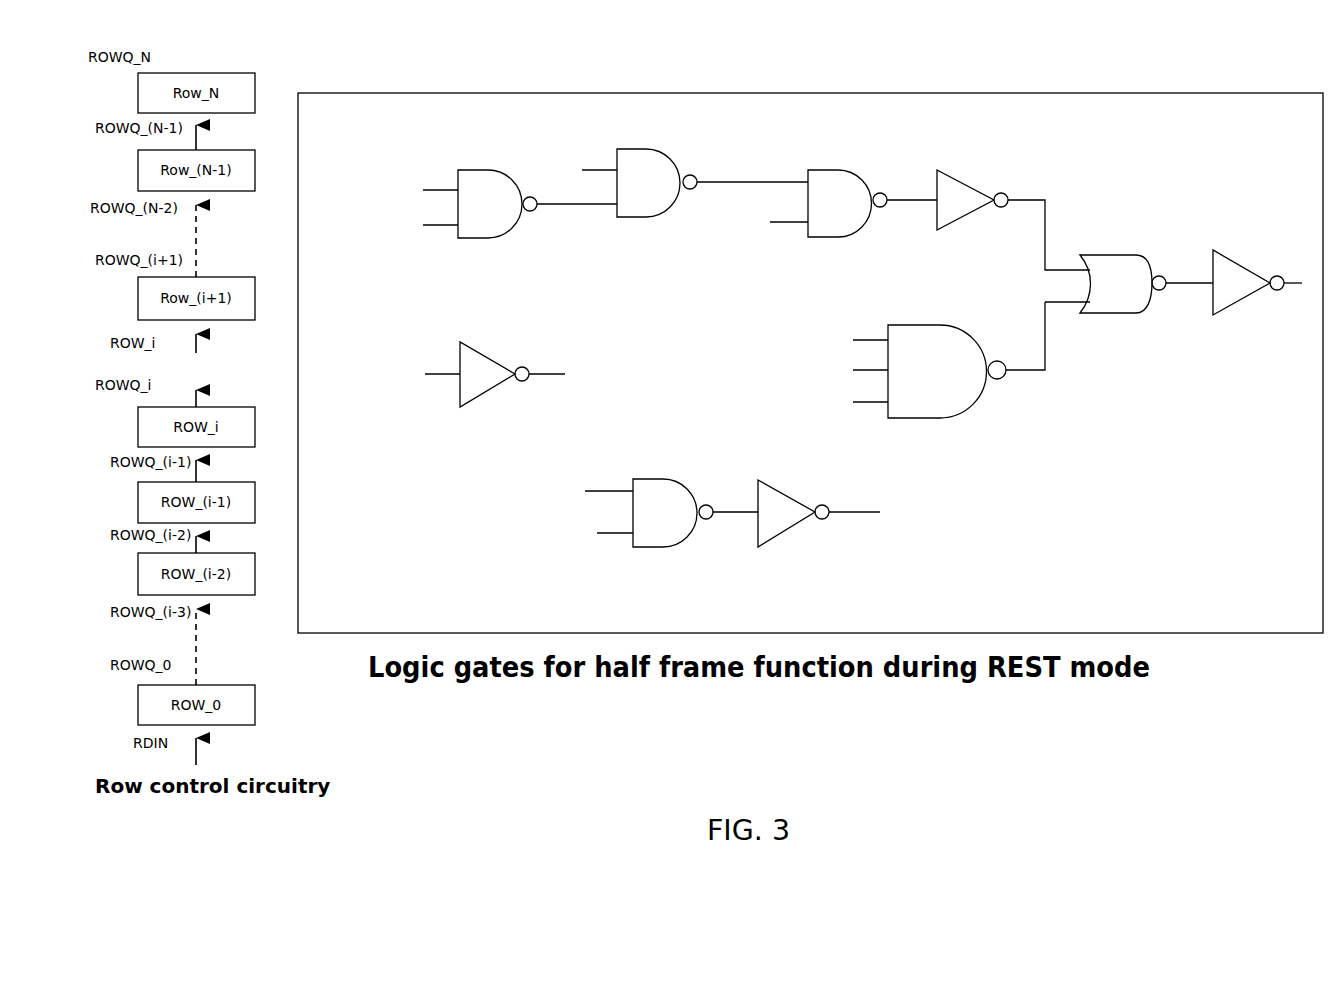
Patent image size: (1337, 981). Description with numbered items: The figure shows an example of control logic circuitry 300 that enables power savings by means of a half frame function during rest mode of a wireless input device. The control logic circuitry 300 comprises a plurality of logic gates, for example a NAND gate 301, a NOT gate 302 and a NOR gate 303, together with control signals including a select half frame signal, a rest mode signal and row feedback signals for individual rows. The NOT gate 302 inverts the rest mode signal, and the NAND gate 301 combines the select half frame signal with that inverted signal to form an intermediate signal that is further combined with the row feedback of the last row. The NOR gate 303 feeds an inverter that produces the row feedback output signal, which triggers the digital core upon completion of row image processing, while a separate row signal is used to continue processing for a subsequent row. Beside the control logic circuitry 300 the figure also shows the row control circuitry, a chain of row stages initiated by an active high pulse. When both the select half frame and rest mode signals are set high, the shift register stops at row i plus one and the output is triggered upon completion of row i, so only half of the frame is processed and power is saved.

The control logic circuitry 300 is at (810, 363).
The NAND gate 301 is at (643, 173).
The NOT gate 302 is at (465, 388).
The NOR gate 303 is at (1133, 297).